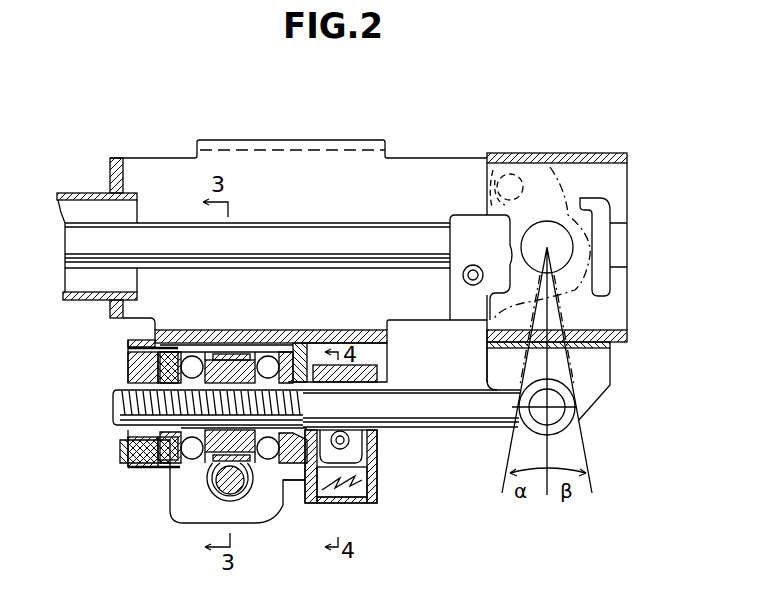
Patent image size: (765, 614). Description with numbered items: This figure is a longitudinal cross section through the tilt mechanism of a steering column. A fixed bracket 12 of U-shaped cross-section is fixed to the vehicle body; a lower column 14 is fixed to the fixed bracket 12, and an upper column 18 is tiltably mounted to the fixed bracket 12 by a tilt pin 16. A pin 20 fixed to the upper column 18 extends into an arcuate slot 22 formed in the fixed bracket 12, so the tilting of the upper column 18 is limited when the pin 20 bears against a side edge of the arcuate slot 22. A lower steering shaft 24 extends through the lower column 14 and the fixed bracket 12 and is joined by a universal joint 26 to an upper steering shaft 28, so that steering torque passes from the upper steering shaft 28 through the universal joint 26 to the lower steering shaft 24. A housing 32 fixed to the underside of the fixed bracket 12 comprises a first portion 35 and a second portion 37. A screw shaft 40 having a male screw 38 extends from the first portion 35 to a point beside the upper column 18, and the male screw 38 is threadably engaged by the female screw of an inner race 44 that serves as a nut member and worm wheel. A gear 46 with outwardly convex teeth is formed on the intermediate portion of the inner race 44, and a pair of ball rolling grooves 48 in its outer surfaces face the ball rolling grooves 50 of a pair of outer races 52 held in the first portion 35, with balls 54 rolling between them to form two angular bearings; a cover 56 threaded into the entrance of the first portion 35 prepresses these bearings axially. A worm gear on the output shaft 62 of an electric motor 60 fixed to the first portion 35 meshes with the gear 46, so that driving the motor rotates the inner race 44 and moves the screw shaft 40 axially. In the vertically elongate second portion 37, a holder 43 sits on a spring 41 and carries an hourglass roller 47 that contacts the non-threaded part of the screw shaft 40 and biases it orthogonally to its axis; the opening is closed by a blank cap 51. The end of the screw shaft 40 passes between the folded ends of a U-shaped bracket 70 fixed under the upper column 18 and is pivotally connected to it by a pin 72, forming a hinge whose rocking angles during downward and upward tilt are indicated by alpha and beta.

The fixed bracket 12 is at (265, 145).
The lower column 14 is at (83, 193).
The tilt pin 16 is at (553, 235).
The upper column 18 is at (592, 153).
The pin 20 is at (525, 150).
The arcuate slot 22 is at (492, 152).
The lower steering shaft 24 is at (358, 225).
The universal joint 26 is at (607, 272).
The upper steering shaft 28 is at (620, 250).
The housing 32 is at (296, 552).
The first portion 35 is at (157, 467).
The second portion 37 is at (368, 503).
The male screw 38 is at (130, 380).
The screw shaft 40 is at (455, 390).
The spring 41 is at (340, 490).
The holder 43 is at (360, 473).
The inner race 44 is at (270, 345).
The gear 46 is at (238, 345).
The hourglass roller 47 is at (362, 440).
The ball rolling grooves 48 is at (200, 352).
The ball rolling grooves 50 is at (196, 462).
The blank cap 51 is at (365, 365).
The outer races 52 is at (191, 462).
The balls 54 is at (185, 345).
The cover 56 is at (130, 458).
The electric motor 60 is at (280, 500).
The output shaft 62 is at (245, 500).
The bracket 70 is at (604, 385).
The pin 72 is at (558, 412).